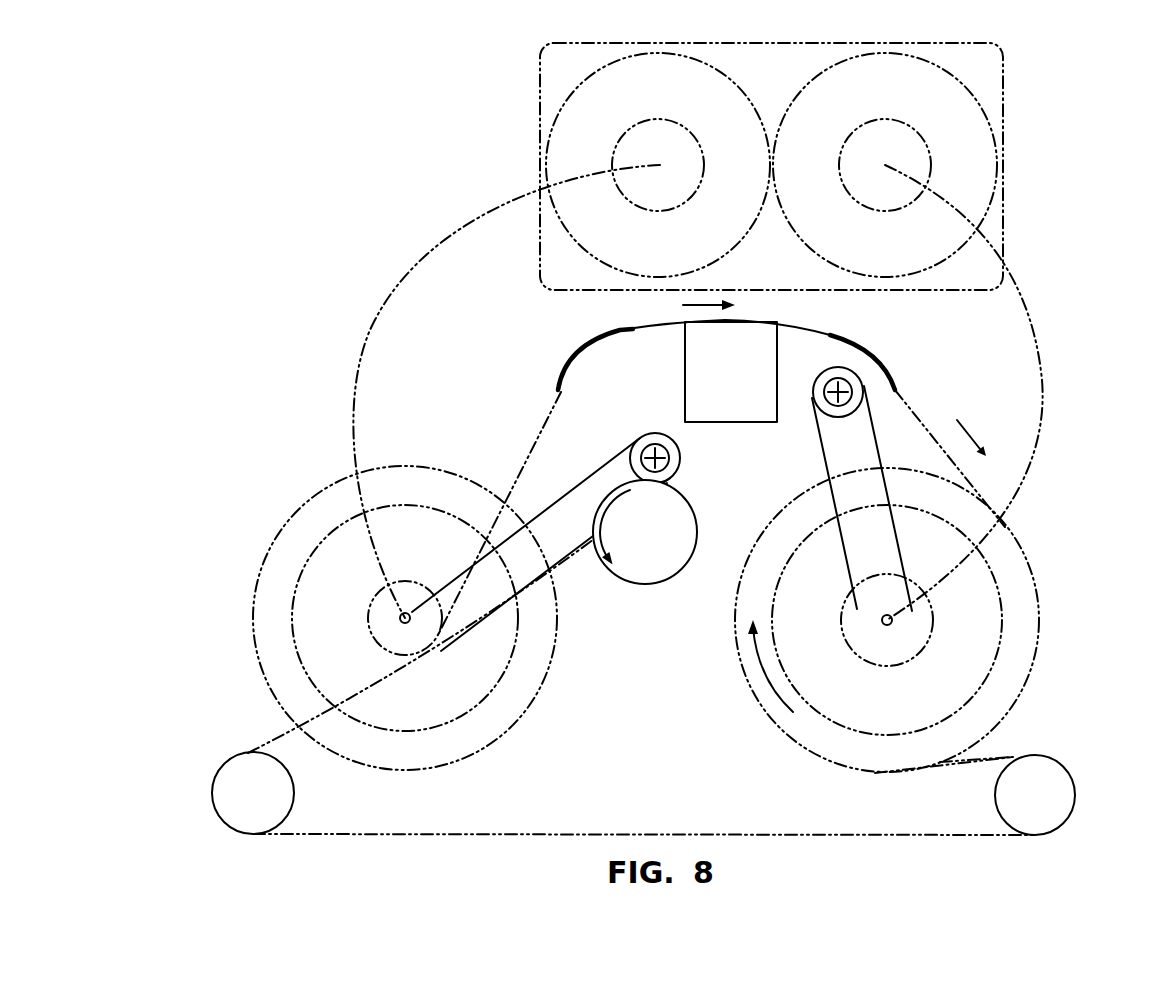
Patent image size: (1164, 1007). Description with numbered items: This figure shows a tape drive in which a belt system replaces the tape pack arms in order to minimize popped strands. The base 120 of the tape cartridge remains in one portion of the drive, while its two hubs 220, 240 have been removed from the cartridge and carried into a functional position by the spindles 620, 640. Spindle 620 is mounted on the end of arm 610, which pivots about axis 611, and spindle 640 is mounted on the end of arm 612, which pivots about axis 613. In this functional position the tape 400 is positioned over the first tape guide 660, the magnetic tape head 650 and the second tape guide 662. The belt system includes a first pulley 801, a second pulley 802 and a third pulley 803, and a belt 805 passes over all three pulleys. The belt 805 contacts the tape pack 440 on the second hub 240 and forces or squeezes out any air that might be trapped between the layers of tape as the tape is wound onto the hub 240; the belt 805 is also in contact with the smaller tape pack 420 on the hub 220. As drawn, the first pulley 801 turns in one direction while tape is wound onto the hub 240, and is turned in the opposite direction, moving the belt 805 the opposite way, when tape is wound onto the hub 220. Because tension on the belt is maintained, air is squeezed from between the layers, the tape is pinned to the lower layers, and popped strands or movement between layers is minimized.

The base 120 is at (992, 82).
The tape 400 is at (655, 328).
The magnetic tape head 650 is at (747, 335).
The first tape guide 660 is at (575, 353).
The second tape guide 662 is at (870, 343).
The arm 610 is at (580, 488).
The axis 611 is at (637, 448).
The arm 612 is at (864, 417).
The axis 613 is at (830, 399).
The spindle 620 is at (420, 595).
The smaller tape pack 420 is at (368, 644).
The hub 220 is at (473, 703).
The spindle 640 is at (886, 622).
The hub 240 is at (978, 650).
The tape pack 440 is at (1022, 686).
The first pulley 801 is at (650, 568).
The second pulley 802 is at (1060, 798).
The third pulley 803 is at (230, 782).
The belt 805 is at (977, 763).